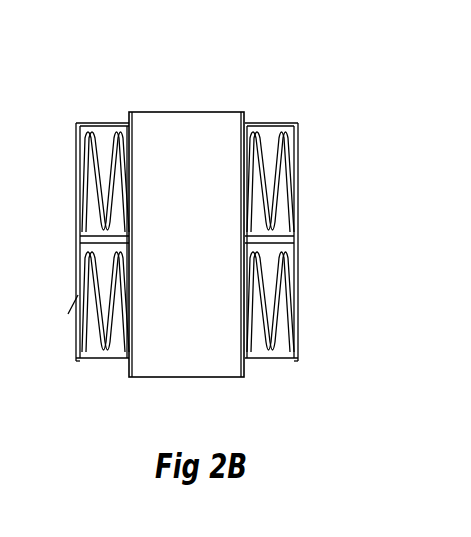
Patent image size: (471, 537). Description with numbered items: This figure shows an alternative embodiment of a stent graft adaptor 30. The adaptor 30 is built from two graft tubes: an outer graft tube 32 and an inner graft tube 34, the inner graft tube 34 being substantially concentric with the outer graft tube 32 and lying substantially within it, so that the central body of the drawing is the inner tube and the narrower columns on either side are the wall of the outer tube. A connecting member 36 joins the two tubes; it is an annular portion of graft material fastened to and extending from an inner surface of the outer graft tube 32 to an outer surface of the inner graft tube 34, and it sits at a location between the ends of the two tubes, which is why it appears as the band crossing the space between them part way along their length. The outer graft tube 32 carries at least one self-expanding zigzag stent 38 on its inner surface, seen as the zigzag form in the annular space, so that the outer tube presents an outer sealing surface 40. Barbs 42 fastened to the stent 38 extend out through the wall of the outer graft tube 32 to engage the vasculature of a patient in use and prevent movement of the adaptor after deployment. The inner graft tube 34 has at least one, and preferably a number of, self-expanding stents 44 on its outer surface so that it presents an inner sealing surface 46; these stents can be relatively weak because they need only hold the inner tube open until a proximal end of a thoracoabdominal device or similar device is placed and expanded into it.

The stent graft adaptor 30 is at (299, 94).
The outer graft tube 32 is at (297, 225).
The inner graft tube 34 is at (252, 362).
The connecting member 36 is at (273, 240).
The self-expanding zigzag stent 38 is at (88, 190).
The outer sealing surface 40 is at (77, 226).
The barbs 42 is at (312, 320).
The self-expanding stents 44 is at (126, 338).
The inner sealing surface 46 is at (133, 360).